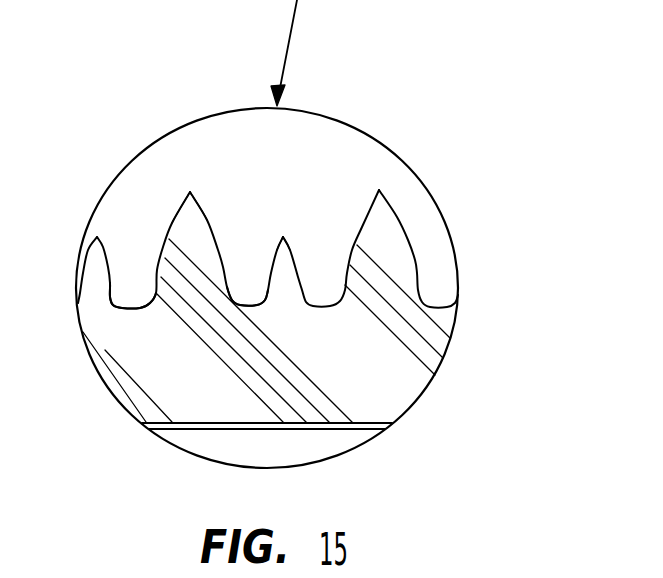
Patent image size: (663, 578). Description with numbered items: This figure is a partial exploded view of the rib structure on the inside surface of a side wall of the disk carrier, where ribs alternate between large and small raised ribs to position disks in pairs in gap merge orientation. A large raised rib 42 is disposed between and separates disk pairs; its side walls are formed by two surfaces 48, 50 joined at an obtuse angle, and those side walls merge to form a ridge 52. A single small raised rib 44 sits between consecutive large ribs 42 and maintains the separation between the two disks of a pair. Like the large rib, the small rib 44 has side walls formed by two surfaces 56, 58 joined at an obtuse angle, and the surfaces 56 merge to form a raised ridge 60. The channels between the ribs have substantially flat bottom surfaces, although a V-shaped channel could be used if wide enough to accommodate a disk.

The large raised rib 42 is at (192, 250).
The small raised rib 44 is at (277, 290).
The surface 48 is at (176, 221).
The surface 50 is at (155, 276).
The ridge 52 is at (190, 192).
The surface 56 is at (279, 239).
The surface 58 is at (270, 278).
The raised ridge 60 is at (289, 241).